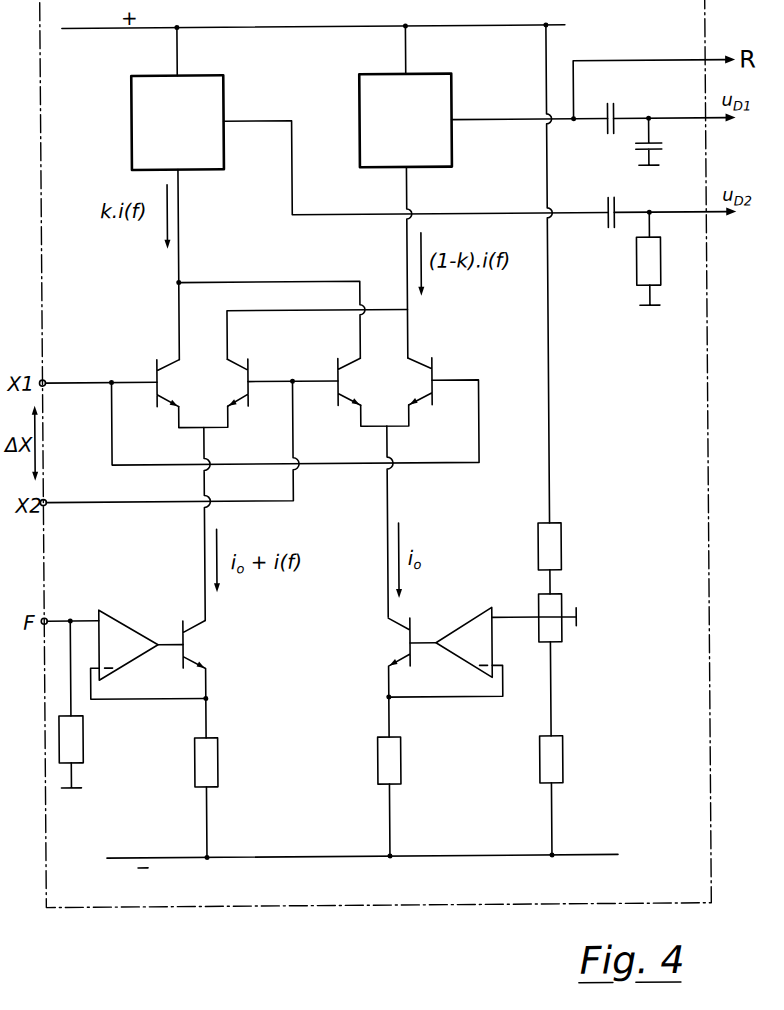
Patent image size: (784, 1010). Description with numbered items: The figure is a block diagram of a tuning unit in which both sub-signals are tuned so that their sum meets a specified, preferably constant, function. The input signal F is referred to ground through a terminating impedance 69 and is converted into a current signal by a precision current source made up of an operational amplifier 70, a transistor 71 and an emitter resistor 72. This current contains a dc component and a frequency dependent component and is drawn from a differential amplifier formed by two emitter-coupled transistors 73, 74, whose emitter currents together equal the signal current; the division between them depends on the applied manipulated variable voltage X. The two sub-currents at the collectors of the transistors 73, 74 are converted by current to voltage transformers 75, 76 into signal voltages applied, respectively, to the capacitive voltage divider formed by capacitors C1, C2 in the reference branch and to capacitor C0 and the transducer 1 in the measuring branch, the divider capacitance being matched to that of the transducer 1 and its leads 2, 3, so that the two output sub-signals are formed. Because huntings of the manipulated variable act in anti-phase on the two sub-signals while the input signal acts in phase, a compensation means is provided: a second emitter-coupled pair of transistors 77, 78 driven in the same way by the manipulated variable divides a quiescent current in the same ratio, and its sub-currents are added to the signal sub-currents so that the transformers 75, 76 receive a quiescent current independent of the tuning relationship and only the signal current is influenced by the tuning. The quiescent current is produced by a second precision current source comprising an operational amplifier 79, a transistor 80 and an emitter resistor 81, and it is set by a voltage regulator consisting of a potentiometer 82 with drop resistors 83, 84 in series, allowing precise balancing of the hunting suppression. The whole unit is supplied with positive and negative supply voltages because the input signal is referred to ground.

The transducer 1 is at (655, 267).
The lead 2 is at (655, 302).
The lead 3 is at (652, 227).
The terminating impedance 69 is at (78, 731).
The operational amplifier 70 is at (123, 628).
The transistor 71 is at (203, 625).
The emitter resistor 72 is at (211, 757).
The transistor 73 is at (158, 365).
The transistor 74 is at (251, 366).
The current to voltage transformer 75 is at (226, 86).
The current to voltage transformer 76 is at (443, 85).
The transistor 77 is at (350, 363).
The transistor 78 is at (437, 358).
The operational amplifier 79 is at (466, 634).
The transistor 80 is at (397, 617).
The emitter resistor 81 is at (393, 753).
The potentiometer 82 is at (555, 636).
The drop resistor 83 is at (556, 541).
The drop resistor 84 is at (555, 751).
The capacitor C1 is at (596, 110).
The capacitor C2 is at (664, 141).
The capacitor C0 is at (595, 205).